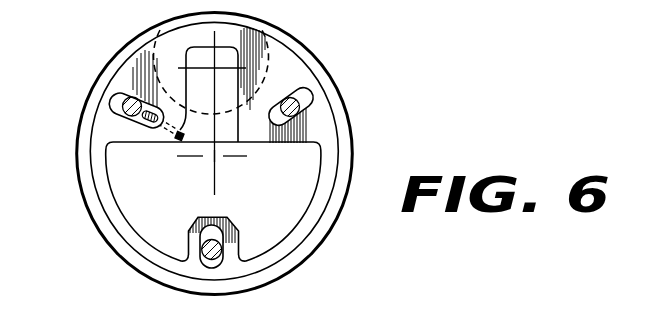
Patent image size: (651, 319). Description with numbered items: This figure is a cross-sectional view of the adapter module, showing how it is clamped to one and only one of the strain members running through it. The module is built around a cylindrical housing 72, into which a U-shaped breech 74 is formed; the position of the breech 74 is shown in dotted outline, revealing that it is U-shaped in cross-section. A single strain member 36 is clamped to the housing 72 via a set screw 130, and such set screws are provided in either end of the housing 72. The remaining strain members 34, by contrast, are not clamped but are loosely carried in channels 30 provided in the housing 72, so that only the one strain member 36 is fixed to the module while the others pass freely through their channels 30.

The channels 30 is at (277, 120).
The strain members 34 is at (293, 108).
The strain member 36 is at (113, 102).
The cylindrical housing 72 is at (288, 77).
The U-shaped breech 74 is at (254, 60).
The set screw 130 is at (170, 133).